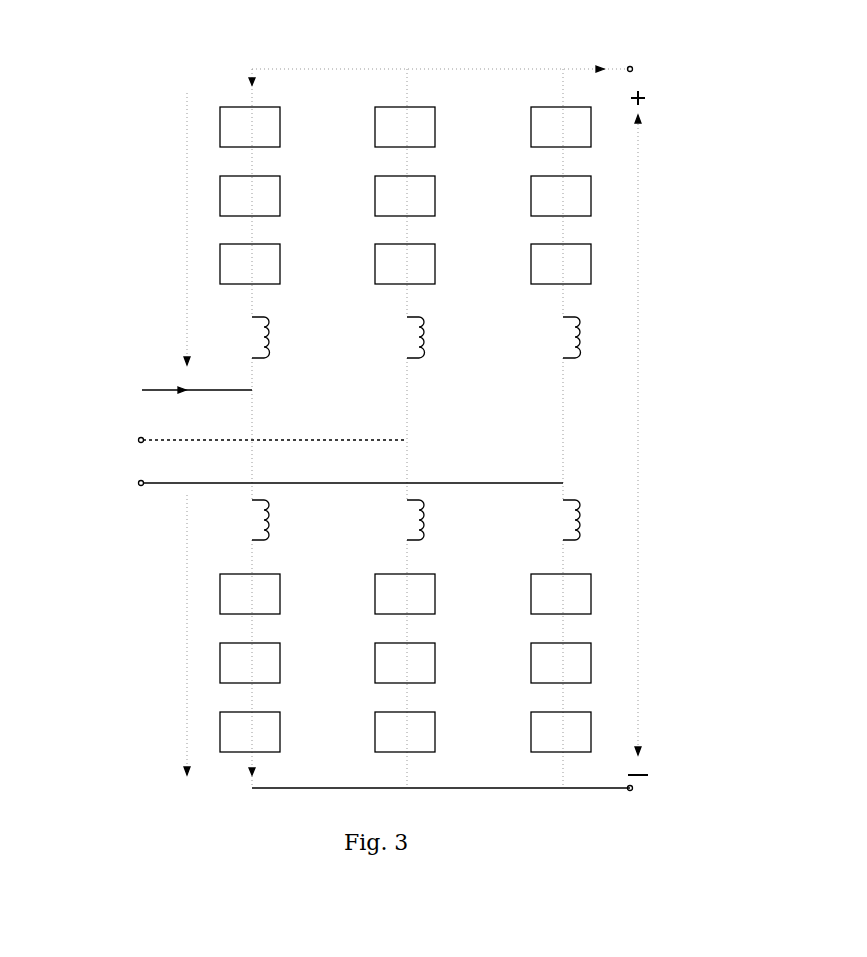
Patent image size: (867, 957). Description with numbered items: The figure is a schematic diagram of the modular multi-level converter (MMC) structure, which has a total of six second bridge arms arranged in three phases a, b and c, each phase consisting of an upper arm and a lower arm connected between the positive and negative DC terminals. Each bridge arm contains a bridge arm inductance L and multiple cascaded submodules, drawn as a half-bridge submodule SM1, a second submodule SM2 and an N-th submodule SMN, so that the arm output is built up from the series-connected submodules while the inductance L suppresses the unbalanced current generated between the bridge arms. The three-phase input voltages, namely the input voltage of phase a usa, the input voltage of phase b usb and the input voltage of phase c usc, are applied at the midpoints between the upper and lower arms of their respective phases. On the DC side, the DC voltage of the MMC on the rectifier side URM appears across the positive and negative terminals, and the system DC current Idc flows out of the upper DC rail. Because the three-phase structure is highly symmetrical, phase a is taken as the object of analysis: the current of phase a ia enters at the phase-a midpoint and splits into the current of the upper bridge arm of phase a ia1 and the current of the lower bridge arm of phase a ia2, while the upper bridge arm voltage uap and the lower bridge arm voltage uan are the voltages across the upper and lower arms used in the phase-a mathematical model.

The bridge arm inductance L is at (416, 428).
The half-bridge submodule SM1 is at (405, 360).
The second submodule SM2 is at (405, 429).
The N-th submodule SMN is at (405, 498).
The input voltage of phase a usa is at (167, 388).
The input voltage of phase b usb is at (244, 435).
The input voltage of phase c usc is at (322, 485).
The upper bridge arm voltage uap is at (165, 229).
The lower bridge arm voltage uan is at (164, 635).
The DC voltage of the MMC on the rectifier side URM is at (631, 433).
The system DC current Idc is at (443, 44).
The current of the upper bridge arm of phase a ia1 is at (233, 80).
The current of the lower bridge arm of phase a ia2 is at (233, 778).
The current of phase a ia is at (209, 411).